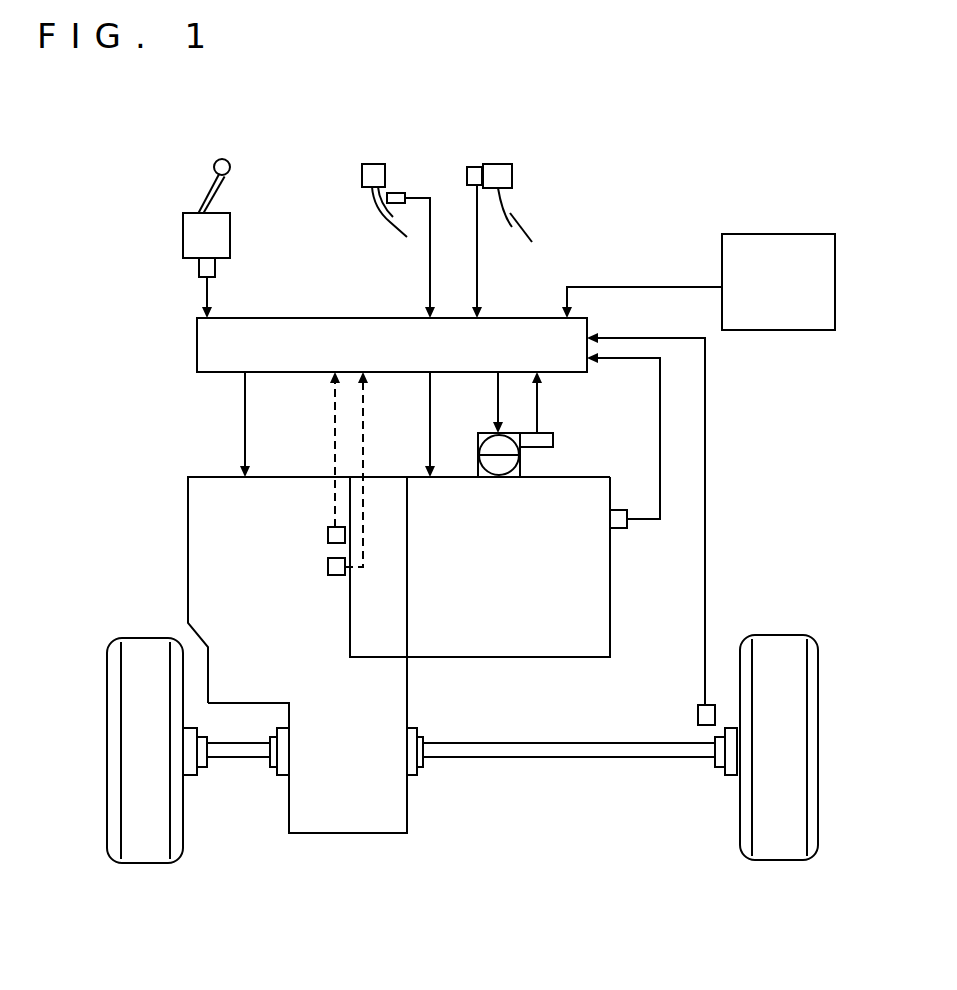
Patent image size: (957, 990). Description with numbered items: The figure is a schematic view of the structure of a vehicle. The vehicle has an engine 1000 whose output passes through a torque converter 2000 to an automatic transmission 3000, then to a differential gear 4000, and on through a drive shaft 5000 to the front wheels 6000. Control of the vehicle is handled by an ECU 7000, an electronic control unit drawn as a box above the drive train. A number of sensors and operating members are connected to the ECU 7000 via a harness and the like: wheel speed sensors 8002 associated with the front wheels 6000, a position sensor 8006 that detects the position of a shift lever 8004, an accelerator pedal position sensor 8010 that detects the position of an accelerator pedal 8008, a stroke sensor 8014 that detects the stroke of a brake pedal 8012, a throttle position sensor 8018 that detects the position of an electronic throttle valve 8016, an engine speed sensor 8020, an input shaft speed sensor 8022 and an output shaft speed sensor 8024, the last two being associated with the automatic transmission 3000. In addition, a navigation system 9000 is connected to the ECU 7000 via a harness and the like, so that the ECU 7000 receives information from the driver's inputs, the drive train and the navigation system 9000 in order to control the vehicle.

The engine 1000 is at (560, 657).
The torque converter 2000 is at (388, 657).
The automatic transmission 3000 is at (200, 477).
The differential gear 4000 is at (347, 837).
The drive shaft 5000 is at (237, 757).
The front wheels 6000 is at (143, 863).
The ECU 7000 is at (197, 358).
The wheel speed sensors 8002 is at (698, 712).
The shift lever 8004 is at (225, 178).
The position sensor 8006 is at (199, 273).
The accelerator pedal 8008 is at (380, 217).
The accelerator pedal position sensor 8010 is at (400, 187).
The brake pedal 8012 is at (502, 197).
The stroke sensor 8014 is at (475, 167).
The electronic throttle valve 8016 is at (520, 470).
The throttle position sensor 8018 is at (553, 440).
The engine speed sensor 8020 is at (618, 528).
The input shaft speed sensor 8022 is at (335, 527).
The output shaft speed sensor 8024 is at (333, 575).
The navigation system 9000 is at (753, 330).